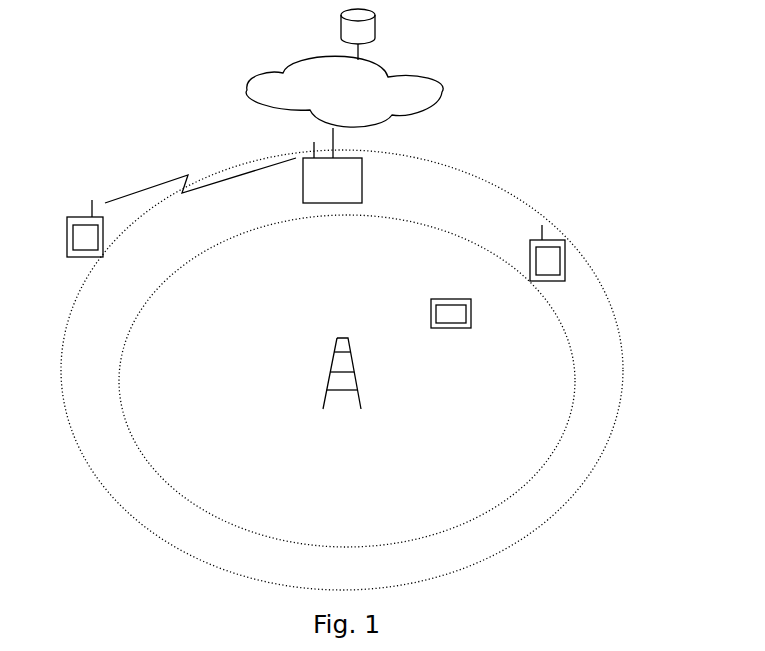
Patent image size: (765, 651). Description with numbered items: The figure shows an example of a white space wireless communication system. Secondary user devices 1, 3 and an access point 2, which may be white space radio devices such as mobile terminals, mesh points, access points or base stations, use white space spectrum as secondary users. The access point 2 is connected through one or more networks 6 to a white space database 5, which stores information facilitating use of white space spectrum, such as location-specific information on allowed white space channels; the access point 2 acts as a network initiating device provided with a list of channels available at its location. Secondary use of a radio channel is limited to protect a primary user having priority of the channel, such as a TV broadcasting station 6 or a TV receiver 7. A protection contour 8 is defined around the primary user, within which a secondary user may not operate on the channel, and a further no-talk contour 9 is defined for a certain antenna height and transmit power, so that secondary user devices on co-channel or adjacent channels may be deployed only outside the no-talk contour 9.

The secondary user device 1 is at (80, 255).
The access point 2 is at (352, 193).
The secondary user device 3 is at (547, 277).
The white space database 5 is at (372, 28).
The network / TV broadcasting station 6 is at (422, 103).
The TV receiver 7 is at (438, 328).
The protection contour 8 is at (568, 427).
The no-talk contour 9 is at (623, 372).